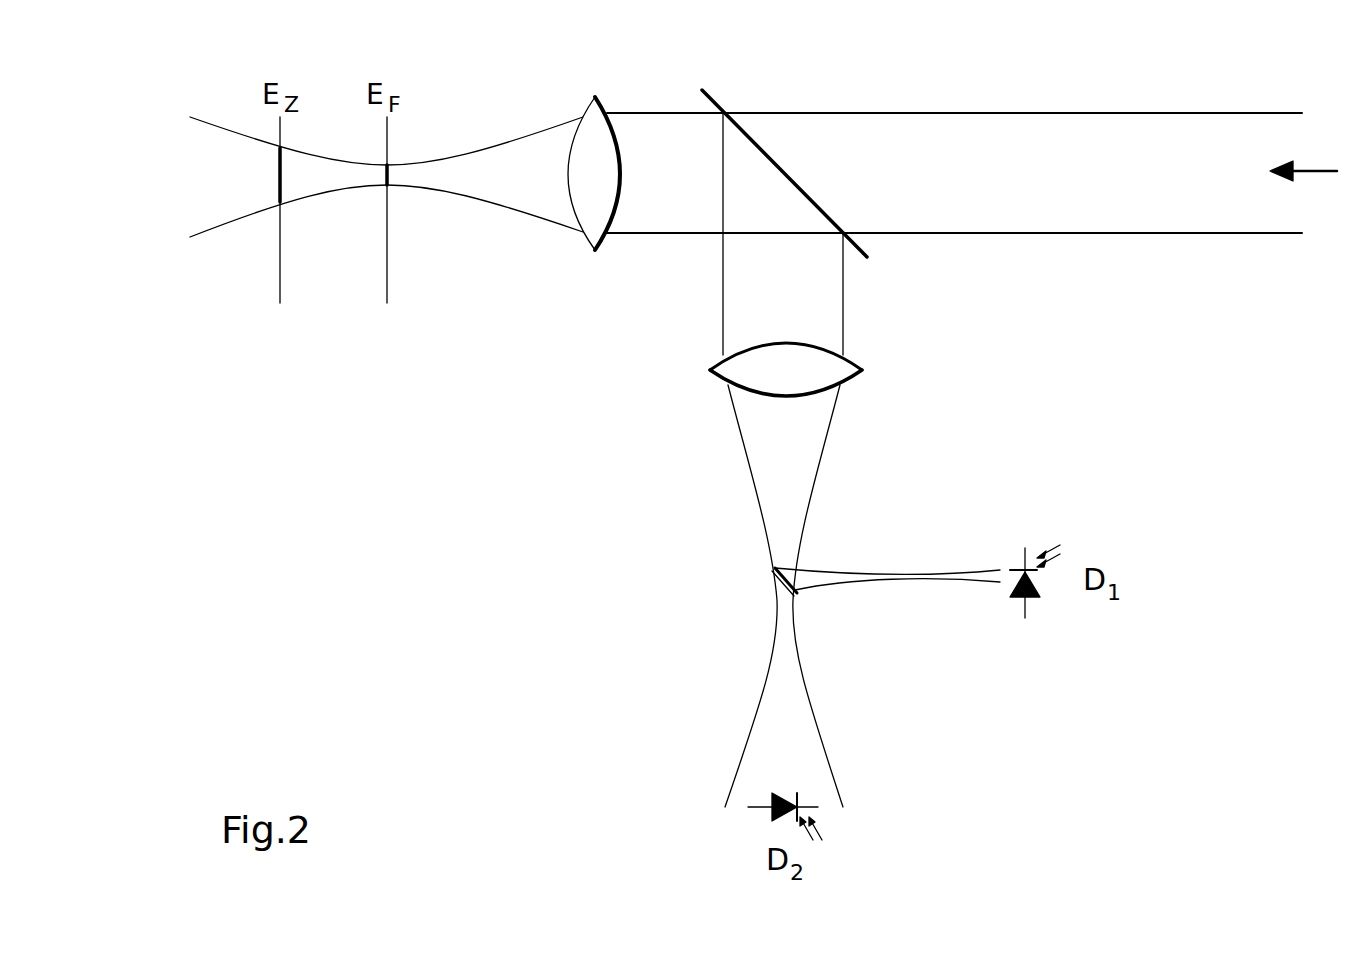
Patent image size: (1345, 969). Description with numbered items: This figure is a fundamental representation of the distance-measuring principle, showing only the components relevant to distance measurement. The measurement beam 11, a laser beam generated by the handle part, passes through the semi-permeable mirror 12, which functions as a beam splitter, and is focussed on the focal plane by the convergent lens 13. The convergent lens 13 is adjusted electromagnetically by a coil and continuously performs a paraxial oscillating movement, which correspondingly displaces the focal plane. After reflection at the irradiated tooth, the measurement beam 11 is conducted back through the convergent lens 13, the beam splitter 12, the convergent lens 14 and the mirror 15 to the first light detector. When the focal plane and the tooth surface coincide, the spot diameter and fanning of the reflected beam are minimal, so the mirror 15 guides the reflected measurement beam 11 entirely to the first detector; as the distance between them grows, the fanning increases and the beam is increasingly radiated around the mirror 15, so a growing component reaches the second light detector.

The measurement beam 11 is at (470, 172).
The semi-permeable mirror 12 is at (714, 100).
The convergent lens 13 is at (597, 168).
The convergent lens 14 is at (710, 370).
The mirror 15 is at (778, 580).